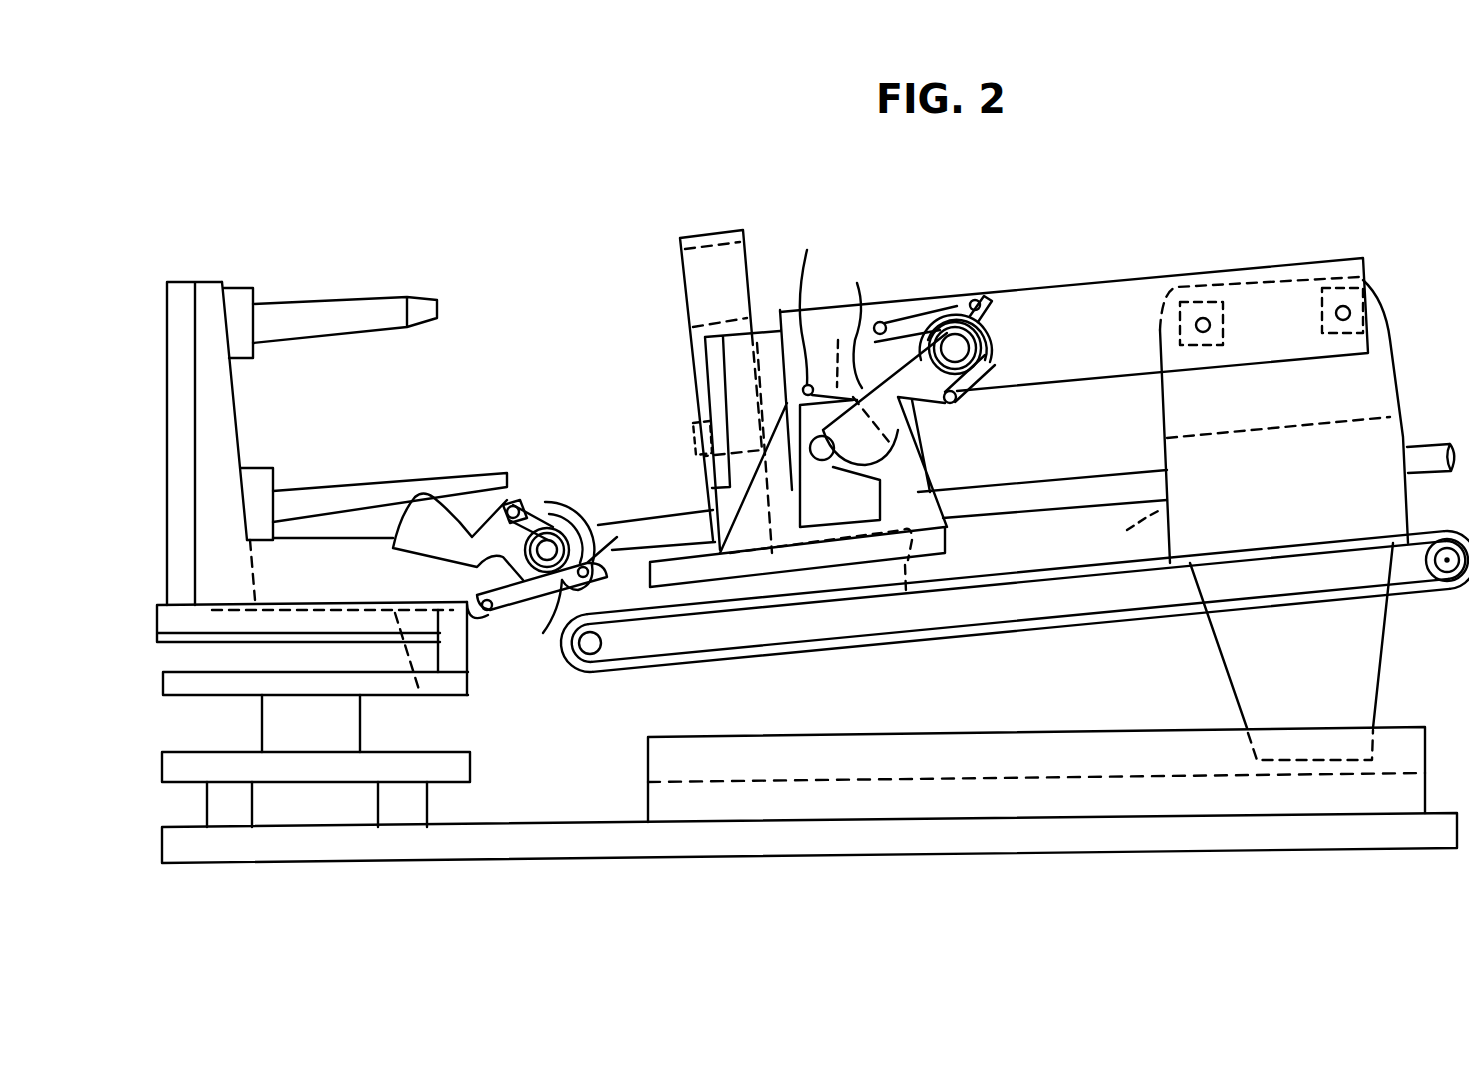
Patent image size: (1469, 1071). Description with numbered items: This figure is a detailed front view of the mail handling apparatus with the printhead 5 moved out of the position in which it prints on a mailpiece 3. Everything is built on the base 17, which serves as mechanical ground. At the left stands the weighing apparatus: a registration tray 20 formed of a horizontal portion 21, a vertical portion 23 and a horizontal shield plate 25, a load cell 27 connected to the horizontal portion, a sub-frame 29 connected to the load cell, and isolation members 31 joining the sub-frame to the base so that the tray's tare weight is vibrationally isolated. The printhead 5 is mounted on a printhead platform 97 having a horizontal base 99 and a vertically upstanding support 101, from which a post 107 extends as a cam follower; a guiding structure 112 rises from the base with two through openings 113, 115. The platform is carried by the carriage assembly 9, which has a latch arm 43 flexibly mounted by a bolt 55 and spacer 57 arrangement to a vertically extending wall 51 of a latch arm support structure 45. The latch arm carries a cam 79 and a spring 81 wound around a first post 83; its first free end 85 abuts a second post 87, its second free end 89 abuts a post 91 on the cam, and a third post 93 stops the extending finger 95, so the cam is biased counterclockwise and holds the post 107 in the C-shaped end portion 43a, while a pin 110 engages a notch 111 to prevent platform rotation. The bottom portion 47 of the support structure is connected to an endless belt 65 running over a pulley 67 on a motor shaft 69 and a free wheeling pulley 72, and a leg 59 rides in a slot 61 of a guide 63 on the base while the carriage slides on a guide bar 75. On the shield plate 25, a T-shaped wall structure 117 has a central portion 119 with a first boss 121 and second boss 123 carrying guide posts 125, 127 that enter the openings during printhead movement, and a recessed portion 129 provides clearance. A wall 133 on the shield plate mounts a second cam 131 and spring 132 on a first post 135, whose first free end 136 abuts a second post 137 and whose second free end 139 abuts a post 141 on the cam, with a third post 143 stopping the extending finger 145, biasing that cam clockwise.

The mailpiece 3 is at (240, 633).
The printhead 5 is at (760, 333).
The carriage assembly 9 is at (1168, 234).
The base 17 is at (635, 822).
The registration tray 20 is at (167, 586).
The horizontal portion 21 is at (245, 695).
The vertical portion 23 is at (470, 640).
The horizontal shield plate 25 is at (330, 615).
The load cell 27 is at (360, 724).
The sub-frame 29 is at (470, 766).
The isolation members 31 is at (252, 804).
The latch arm 43 is at (1090, 284).
The C-shaped end portion 43a is at (925, 482).
The latch arm support structure 45 is at (1426, 368).
The bottom portion 47 is at (1125, 530).
The vertically extending wall 51 is at (1388, 344).
The bolt 55 is at (1205, 318).
The spacer 57 is at (1230, 338).
The leg 59 is at (1220, 650).
The slot 61 is at (1110, 778).
The guide 63 is at (822, 736).
The endless belt 65 is at (925, 642).
The pulley 67 is at (620, 642).
The shaft 69 is at (592, 656).
The free wheeling pulley 72 is at (1425, 585).
The guide bar 75 is at (1415, 448).
The cam 79 is at (885, 363).
The spring 81 is at (960, 312).
The first post 83 is at (983, 348).
The first free end 85 is at (900, 318).
The second post 87 is at (881, 321).
The second free end 89 is at (992, 372).
The post 91 is at (958, 400).
The third post 93 is at (983, 300).
The extending finger 95 is at (992, 318).
The printhead platform 97 is at (962, 546).
The horizontal base 99 is at (906, 570).
The vertically upstanding support 101 is at (915, 455).
The post 107 is at (830, 462).
The pin 110 is at (828, 314).
The notch 111 is at (827, 354).
The guiding structure 112 is at (720, 235).
The through opening 113 is at (697, 420).
The through opening 115 is at (682, 240).
The T-shaped wall structure 117 is at (165, 285).
The central portion 119 is at (212, 282).
The first boss 121 is at (255, 470).
The second boss 123 is at (250, 290).
The guide post 125 is at (340, 490).
The guide post 127 is at (330, 302).
The recessed portion 129 is at (422, 690).
The cam 131 is at (396, 547).
The spring 132 is at (494, 612).
The wall 133 is at (570, 533).
The first post 135 is at (567, 500).
The first free end 136 is at (470, 567).
The second post 137 is at (503, 625).
The second free end 139 is at (532, 512).
The post 141 is at (517, 504).
The third post 143 is at (598, 560).
The extending finger 145 is at (612, 514).